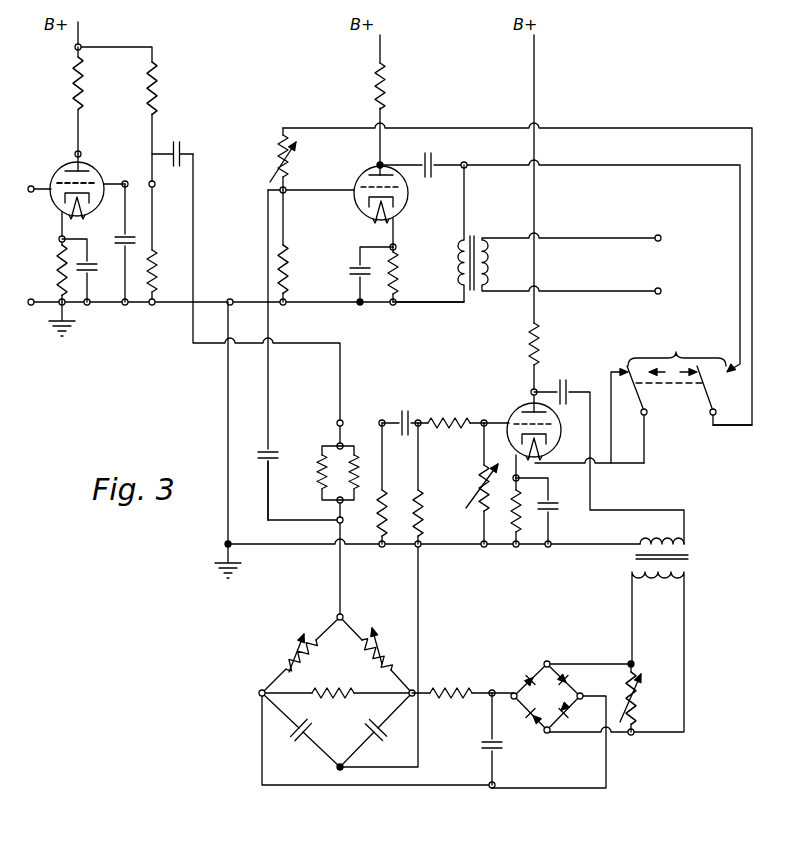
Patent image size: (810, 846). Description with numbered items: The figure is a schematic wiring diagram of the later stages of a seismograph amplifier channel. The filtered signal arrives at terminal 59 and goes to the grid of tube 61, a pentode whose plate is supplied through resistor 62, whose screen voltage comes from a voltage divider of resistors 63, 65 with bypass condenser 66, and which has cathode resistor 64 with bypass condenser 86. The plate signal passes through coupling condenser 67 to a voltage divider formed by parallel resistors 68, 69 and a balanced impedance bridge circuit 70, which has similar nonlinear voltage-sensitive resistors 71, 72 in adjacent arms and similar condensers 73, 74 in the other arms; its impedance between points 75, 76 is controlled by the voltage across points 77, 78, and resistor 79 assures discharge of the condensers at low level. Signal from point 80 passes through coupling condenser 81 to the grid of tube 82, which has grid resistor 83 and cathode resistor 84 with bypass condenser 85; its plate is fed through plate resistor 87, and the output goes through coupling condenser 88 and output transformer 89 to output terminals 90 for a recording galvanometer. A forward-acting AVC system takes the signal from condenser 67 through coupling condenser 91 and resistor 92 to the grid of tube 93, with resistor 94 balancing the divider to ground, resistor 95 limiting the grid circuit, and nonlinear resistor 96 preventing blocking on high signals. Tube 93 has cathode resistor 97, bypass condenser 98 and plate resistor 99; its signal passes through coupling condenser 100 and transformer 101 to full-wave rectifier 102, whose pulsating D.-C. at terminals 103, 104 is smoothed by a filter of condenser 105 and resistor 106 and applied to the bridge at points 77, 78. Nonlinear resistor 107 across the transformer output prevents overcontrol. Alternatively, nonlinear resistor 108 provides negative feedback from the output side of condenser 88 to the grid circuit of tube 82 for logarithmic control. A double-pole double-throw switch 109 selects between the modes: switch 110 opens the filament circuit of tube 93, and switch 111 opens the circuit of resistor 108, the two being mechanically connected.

The terminal 59 is at (35, 182).
The tube 61 is at (98, 185).
The resistor 62 is at (72, 78).
The resistor 63 is at (160, 92).
The cathode resistor 64 is at (57, 272).
The resistor 65 is at (157, 284).
The bypass condenser 66 is at (135, 238).
The coupling condenser 67 is at (178, 142).
The parallel resistor 68 is at (318, 492).
The parallel resistor 69 is at (358, 468).
The balanced impedance bridge circuit 70 is at (366, 689).
The nonlinear voltage-sensitive resistor 71 is at (296, 645).
The nonlinear voltage-sensitive resistor 72 is at (376, 642).
The condenser 73 is at (300, 749).
The condenser 74 is at (375, 745).
The point 75 is at (337, 615).
The point 76 is at (340, 763).
The point 77 is at (262, 690).
The point 78 is at (417, 690).
The resistor 79 is at (326, 698).
The point 80 is at (336, 519).
The coupling condenser 81 is at (277, 451).
The tube 82 is at (368, 171).
The grid resistor 83 is at (290, 271).
The cathode resistor 84 is at (397, 281).
The bypass condenser 85 is at (350, 279).
The bypass condenser 86 is at (94, 272).
The plate resistor 87 is at (385, 90).
The coupling condenser 88 is at (434, 165).
The output transformer 89 is at (479, 246).
The output terminals 90 is at (658, 243).
The coupling condenser 91 is at (407, 410).
The resistor 92 is at (441, 415).
The tube 93 is at (516, 409).
The resistor 94 is at (383, 498).
The resistor 95 is at (421, 501).
The nonlinear voltage-sensitive resistor 96 is at (473, 483).
The cathode resistor 97 is at (518, 525).
The bypass condenser 98 is at (553, 516).
The resistor 99 is at (541, 349).
The coupling condenser 100 is at (578, 376).
The transformer 101 is at (631, 560).
The full-wave rectifier 102 is at (551, 696).
The terminal 103 is at (512, 692).
The terminal 104 is at (582, 695).
The condenser 105 is at (501, 749).
The resistor 106 is at (453, 700).
The nonlinear voltage-sensitive resistor 107 is at (637, 698).
The resistor 108 is at (276, 153).
The double-pole double-throw switch 109 is at (681, 399).
The switch 110 is at (648, 411).
The switch 111 is at (707, 421).